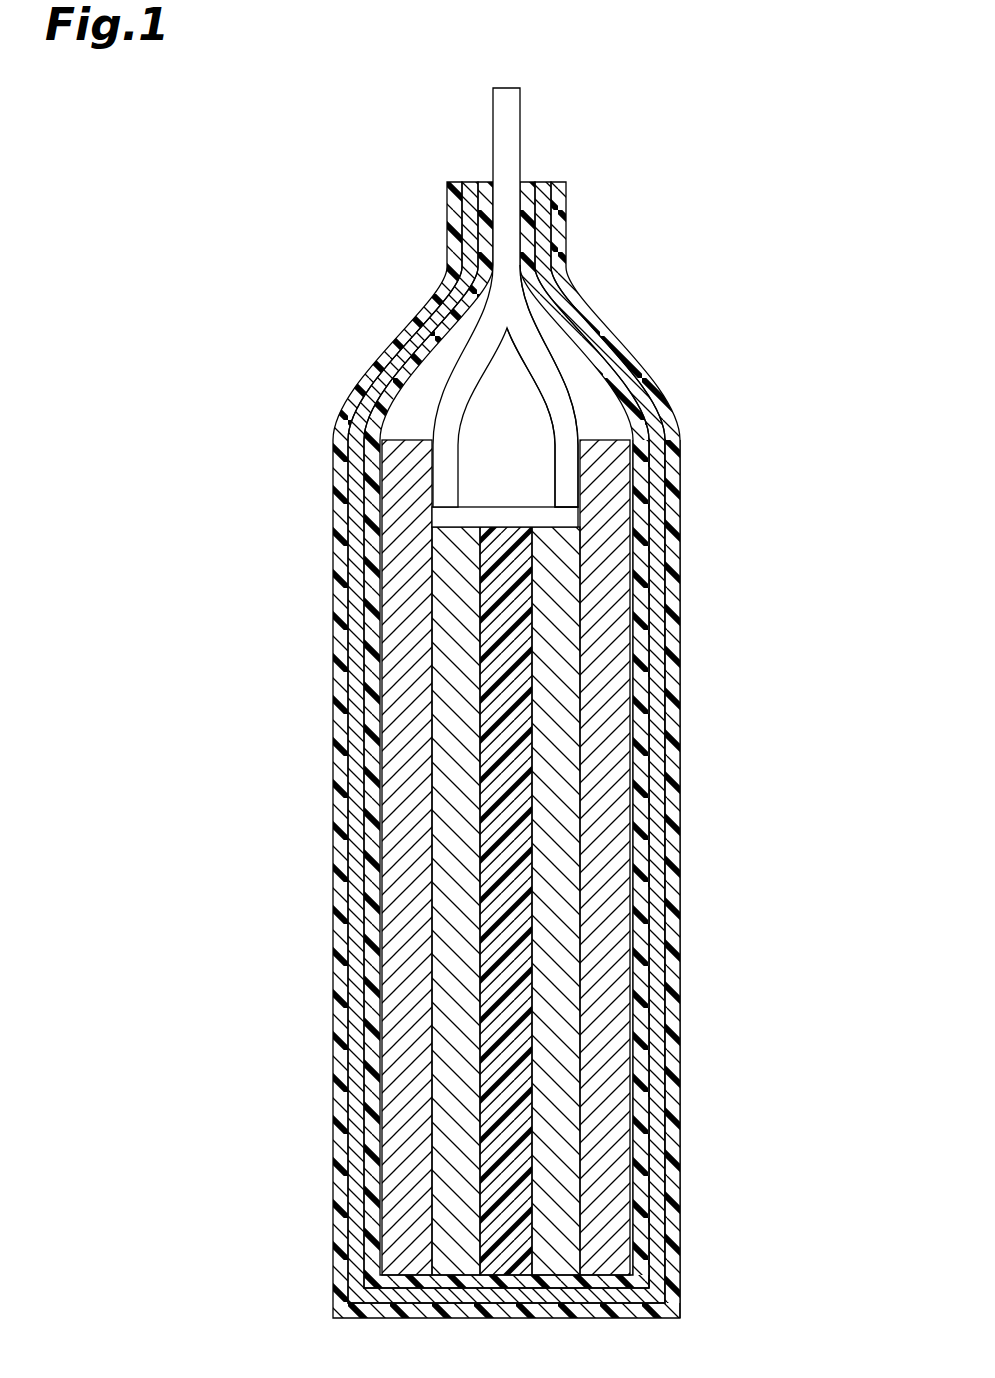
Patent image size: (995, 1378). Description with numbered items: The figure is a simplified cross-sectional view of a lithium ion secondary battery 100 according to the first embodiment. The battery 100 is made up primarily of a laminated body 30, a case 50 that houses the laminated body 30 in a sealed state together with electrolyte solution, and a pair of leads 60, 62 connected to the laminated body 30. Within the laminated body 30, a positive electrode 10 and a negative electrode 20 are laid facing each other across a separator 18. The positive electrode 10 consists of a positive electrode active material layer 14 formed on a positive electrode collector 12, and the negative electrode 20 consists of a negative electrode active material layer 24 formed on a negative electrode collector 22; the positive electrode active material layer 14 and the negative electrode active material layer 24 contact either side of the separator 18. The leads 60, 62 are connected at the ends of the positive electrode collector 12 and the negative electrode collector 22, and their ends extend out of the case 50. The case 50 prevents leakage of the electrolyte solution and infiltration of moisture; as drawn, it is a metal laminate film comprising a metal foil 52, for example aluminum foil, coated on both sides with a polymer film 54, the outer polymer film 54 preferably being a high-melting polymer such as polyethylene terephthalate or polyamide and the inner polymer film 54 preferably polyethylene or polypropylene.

The lithium ion secondary battery 100 is at (712, 157).
The positive electrode 10 is at (415, 857).
The positive electrode collector 12 is at (588, 652).
The positive electrode active material layer 14 is at (550, 695).
The separator 18 is at (500, 741).
The negative electrode 20 is at (340, 857).
The negative electrode collector 22 is at (403, 813).
The negative electrode active material layer 24 is at (447, 778).
The laminated body 30 is at (388, 857).
The case 50 is at (581, 750).
The metal foil 52 is at (652, 925).
The polymer film 54 is at (640, 883).
The lead 60 is at (478, 349).
The lead 62 is at (531, 349).